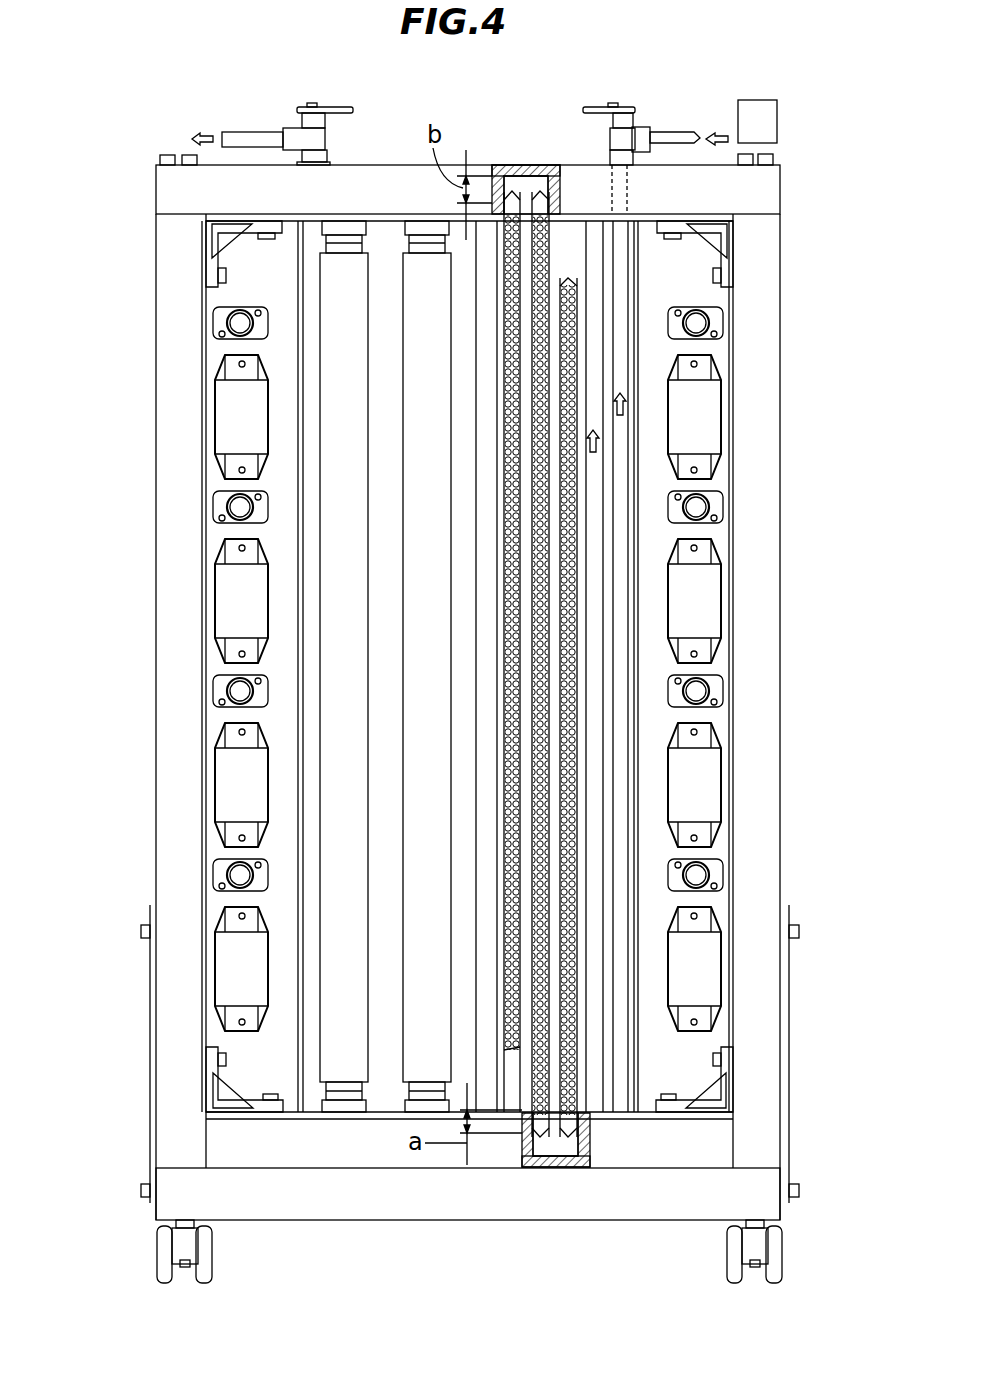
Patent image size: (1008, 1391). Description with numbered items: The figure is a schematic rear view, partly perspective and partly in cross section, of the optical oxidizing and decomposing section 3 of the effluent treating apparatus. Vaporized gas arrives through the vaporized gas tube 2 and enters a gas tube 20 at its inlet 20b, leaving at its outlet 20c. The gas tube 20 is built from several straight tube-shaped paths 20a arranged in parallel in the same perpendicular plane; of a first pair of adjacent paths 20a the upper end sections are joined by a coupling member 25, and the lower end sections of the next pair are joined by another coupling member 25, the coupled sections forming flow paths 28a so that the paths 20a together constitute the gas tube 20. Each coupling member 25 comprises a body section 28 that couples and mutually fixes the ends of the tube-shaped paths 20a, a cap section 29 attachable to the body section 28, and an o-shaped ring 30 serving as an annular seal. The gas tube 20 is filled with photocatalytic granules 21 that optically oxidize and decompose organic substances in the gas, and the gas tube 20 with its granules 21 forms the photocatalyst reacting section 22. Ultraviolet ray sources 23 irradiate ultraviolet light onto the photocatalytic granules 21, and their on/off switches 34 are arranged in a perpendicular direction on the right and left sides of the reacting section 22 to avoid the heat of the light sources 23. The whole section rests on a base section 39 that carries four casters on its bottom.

The vaporized gas tube 2 is at (770, 138).
The optical oxidizing and decomposing section 3 is at (823, 158).
The gas tube 20 is at (590, 1052).
The tube-shaped path 20a is at (595, 1088).
The inlet 20b is at (625, 140).
The outlet 20c is at (297, 140).
The photocatalytic granules 21 is at (507, 983).
The photocatalyst reacting section 22 is at (507, 920).
The ultraviolet ray source 23 is at (427, 270).
The coupling member 25 is at (503, 176).
The body section 28 is at (540, 178).
The flow path 28a is at (522, 178).
The cap section 29 is at (550, 213).
The o-shaped ring 30 is at (557, 190).
The on/off switch 34 is at (232, 410).
The base section 39 is at (190, 1205).